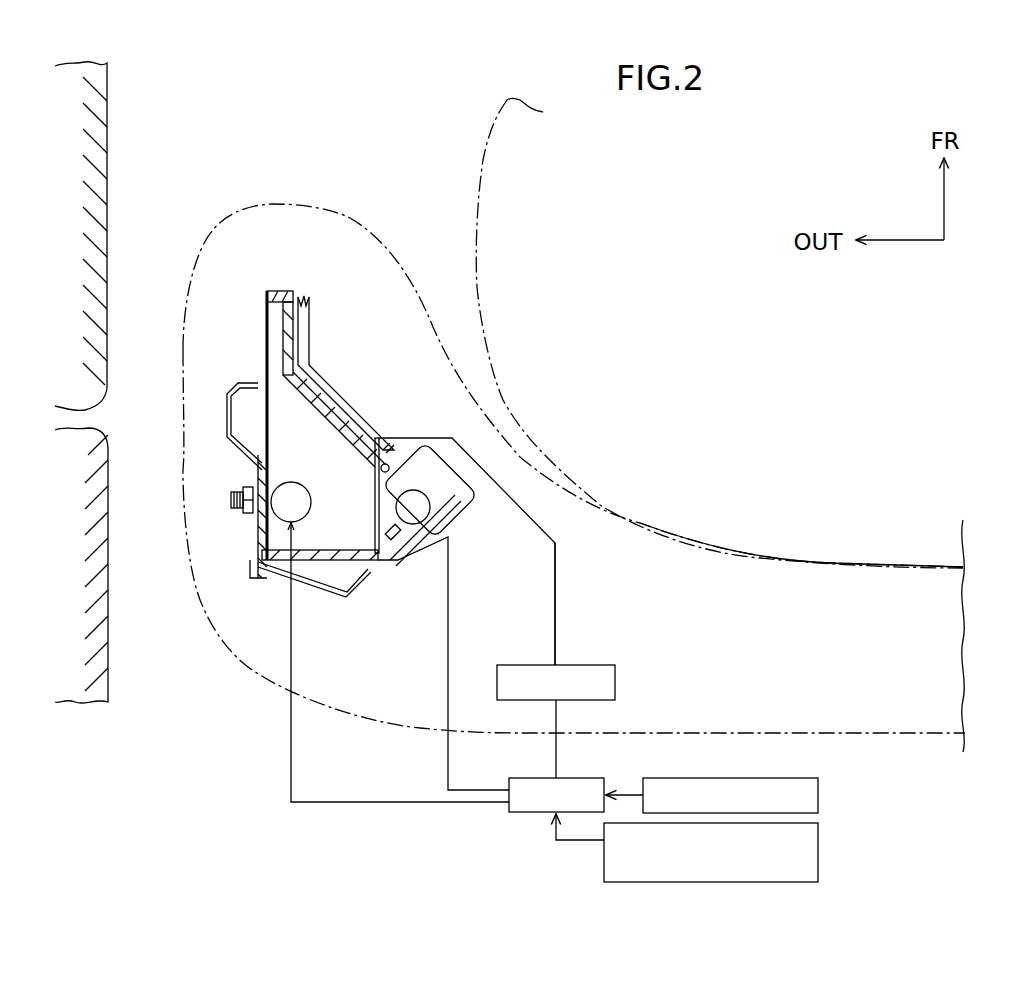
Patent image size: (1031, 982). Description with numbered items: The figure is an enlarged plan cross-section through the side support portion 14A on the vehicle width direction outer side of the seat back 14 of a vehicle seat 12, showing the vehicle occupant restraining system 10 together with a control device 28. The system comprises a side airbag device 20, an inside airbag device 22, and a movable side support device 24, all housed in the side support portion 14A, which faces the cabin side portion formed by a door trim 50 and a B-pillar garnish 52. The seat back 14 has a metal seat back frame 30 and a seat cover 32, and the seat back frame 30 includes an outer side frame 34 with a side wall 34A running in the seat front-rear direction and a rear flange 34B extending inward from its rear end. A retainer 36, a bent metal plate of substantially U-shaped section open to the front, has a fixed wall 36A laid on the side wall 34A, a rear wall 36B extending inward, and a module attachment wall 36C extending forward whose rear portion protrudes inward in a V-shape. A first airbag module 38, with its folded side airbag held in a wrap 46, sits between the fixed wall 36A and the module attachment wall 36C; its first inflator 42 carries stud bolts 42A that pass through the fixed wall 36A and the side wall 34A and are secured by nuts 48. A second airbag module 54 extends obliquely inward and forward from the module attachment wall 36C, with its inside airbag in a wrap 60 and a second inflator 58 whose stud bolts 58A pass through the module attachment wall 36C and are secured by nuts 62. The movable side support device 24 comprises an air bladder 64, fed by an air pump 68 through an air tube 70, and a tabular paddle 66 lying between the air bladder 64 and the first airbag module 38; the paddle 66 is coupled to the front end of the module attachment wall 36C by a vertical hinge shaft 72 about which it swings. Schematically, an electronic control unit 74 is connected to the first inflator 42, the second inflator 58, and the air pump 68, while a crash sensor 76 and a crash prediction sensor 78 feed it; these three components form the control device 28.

The vehicle occupant restraining system 10 is at (254, 795).
The vehicle seat 12 is at (848, 535).
The seat back 14 is at (801, 495).
The side support portion 14A is at (300, 205).
The side airbag device 20 is at (255, 425).
The inside airbag device 22 is at (472, 500).
The movable side support device 24 is at (352, 368).
The control device 28 is at (874, 823).
The seat back frame 30 is at (200, 557).
The seat cover 32 is at (232, 215).
The outer side frame 34 is at (200, 557).
The side wall 34A is at (250, 447).
The rear flange 34B is at (255, 572).
The retainer 36 is at (254, 494).
The fixed wall 36A is at (252, 530).
The rear wall 36B is at (348, 582).
The module attachment wall 36C is at (376, 481).
The first airbag module 38 is at (187, 378).
The first inflator 42 is at (291, 481).
The stud bolts 42A is at (230, 498).
The wrap 46 is at (313, 379).
The nuts 48 is at (185, 491).
The door trim 50 is at (108, 128).
The B-pillar garnish 52 is at (108, 626).
The second airbag module 54 is at (467, 551).
The second inflator 58 is at (433, 508).
The stud bolts 58A is at (390, 555).
The wrap 60 is at (419, 463).
The nuts 62 is at (394, 537).
The air bladder 64 is at (358, 408).
The paddle 66 is at (318, 375).
The air pump 68 is at (616, 683).
The air tube 70 is at (557, 579).
The hinge shaft 72 is at (381, 467).
The electronic control unit 74 is at (527, 813).
The crash sensor 76 is at (820, 795).
The crash prediction sensor 78 is at (820, 853).